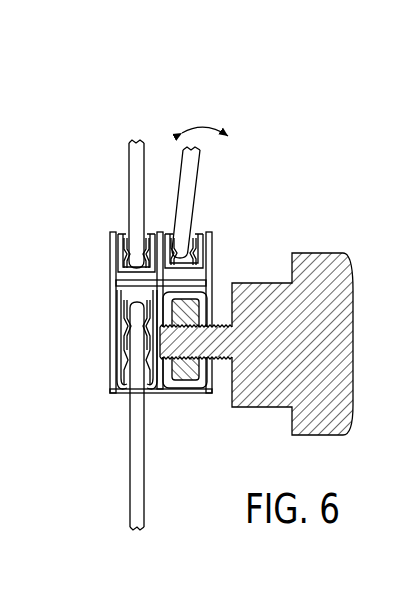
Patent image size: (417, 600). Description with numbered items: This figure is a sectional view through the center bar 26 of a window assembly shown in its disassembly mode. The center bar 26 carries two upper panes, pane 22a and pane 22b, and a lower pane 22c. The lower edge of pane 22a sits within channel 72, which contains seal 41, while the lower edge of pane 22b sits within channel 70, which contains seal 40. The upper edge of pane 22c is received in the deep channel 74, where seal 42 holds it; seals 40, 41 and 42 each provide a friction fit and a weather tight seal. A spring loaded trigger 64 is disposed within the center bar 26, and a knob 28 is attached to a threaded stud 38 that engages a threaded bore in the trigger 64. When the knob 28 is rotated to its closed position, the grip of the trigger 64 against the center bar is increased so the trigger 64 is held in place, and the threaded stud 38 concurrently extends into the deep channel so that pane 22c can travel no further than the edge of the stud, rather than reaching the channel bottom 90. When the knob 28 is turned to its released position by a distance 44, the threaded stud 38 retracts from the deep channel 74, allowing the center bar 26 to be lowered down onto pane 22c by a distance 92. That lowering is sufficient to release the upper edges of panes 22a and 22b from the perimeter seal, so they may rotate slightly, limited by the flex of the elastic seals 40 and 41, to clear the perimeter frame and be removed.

The upper pane 22a is at (200, 188).
The upper pane 22b is at (128, 170).
The lower pane 22c is at (137, 450).
The center bar 26 is at (214, 262).
The knob 28 is at (362, 266).
The threaded stud 38 is at (195, 382).
The seal 40 is at (140, 245).
The seal 41 is at (177, 240).
The seal 42 is at (122, 355).
The distance 44 is at (212, 400).
The spring loaded trigger 64 is at (179, 380).
The channel 70 is at (145, 245).
The channel 72 is at (192, 236).
The deep channel 74 is at (126, 340).
The channel bottom 90 is at (140, 300).
The distance 92 is at (108, 357).